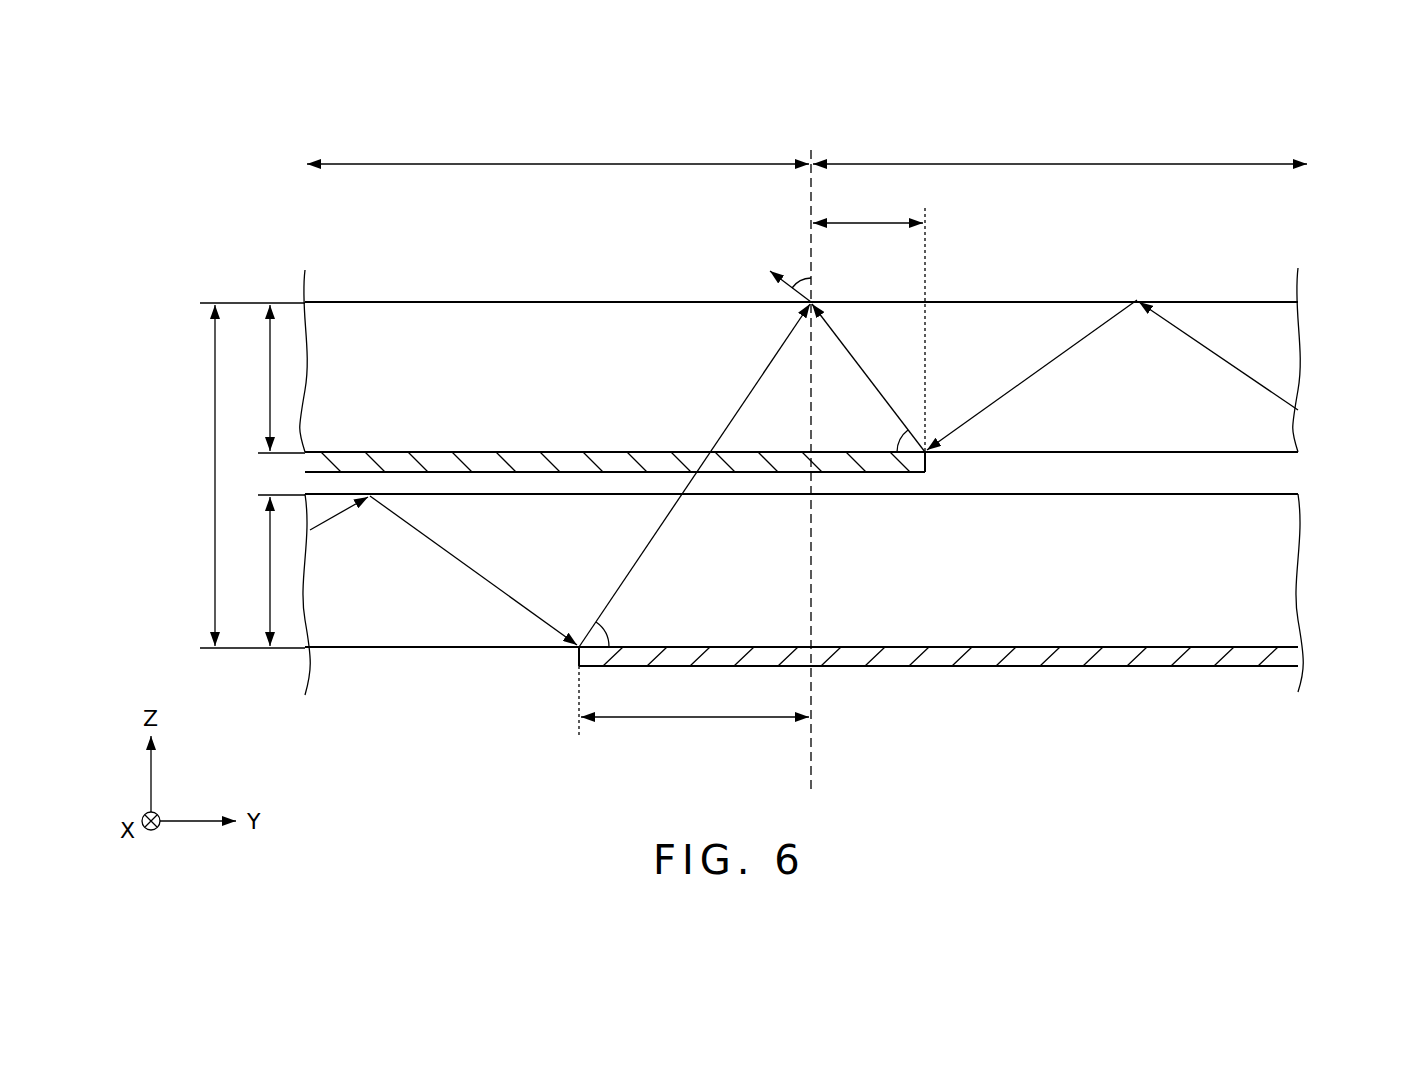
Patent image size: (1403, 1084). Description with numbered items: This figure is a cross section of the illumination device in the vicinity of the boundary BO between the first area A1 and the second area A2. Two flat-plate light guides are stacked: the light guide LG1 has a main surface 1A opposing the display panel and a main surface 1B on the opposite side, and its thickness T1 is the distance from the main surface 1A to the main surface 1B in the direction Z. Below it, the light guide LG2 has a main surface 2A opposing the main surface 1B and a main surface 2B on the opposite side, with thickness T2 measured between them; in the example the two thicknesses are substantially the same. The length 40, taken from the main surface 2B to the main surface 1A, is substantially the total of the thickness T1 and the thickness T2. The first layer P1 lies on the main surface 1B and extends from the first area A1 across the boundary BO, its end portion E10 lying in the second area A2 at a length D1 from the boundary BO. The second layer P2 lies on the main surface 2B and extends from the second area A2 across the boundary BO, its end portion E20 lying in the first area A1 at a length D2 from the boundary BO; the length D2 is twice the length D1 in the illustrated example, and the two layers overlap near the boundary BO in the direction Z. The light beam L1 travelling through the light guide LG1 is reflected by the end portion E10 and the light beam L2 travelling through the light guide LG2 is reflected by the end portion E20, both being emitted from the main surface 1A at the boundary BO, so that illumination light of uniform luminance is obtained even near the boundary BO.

The first area A1 is at (558, 150).
The second area A2 is at (1060, 150).
The boundary BO is at (811, 457).
The length D1 is at (869, 323).
The length D2 is at (694, 709).
The length 40 is at (199, 475).
The thickness T1 is at (253, 378).
The thickness T2 is at (253, 571).
The light guide LG1 is at (1293, 365).
The light guide LG2 is at (1293, 578).
The main surface 1A is at (1213, 297).
The main surface 1B is at (1197, 458).
The main surface 2A is at (1115, 487).
The main surface 2B is at (1126, 652).
The first layer P1 is at (310, 464).
The second layer P2 is at (1293, 655).
The end portion E10 is at (935, 463).
The end portion E20 is at (576, 661).
The light beam L1 is at (868, 378).
The light beam L2 is at (694, 475).